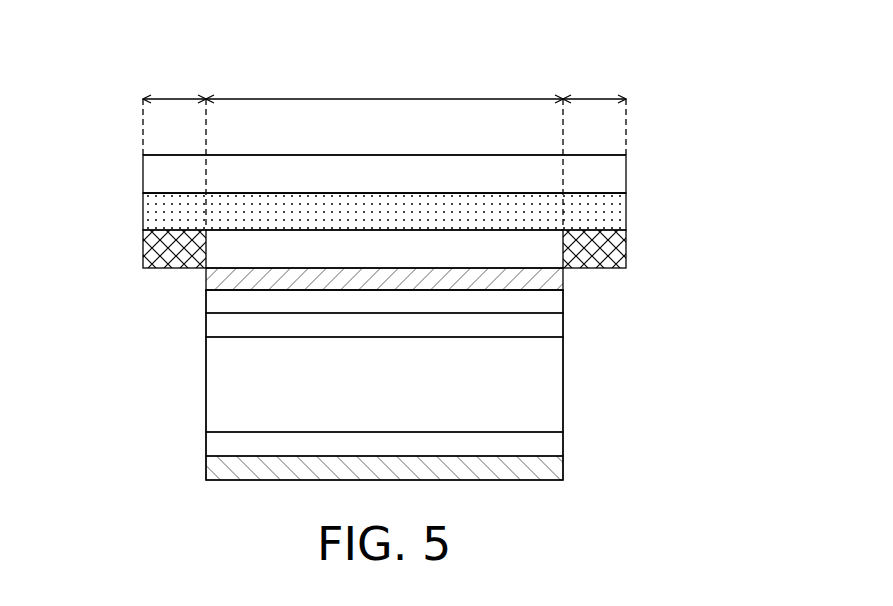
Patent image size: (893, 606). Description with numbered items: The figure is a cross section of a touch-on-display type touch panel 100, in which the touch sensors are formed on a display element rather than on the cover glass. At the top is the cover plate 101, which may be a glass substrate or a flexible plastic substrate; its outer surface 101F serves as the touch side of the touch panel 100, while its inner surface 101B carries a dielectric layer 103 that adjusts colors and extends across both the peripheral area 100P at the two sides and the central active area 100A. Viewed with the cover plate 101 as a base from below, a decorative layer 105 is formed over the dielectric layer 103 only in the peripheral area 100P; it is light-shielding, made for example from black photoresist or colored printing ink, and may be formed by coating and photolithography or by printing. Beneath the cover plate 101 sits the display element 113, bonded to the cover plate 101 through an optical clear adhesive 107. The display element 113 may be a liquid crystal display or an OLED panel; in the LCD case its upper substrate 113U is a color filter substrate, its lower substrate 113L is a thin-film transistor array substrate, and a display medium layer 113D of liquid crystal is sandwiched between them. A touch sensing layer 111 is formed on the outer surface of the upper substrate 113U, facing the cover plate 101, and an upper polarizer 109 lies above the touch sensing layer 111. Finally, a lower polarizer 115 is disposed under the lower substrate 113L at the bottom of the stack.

The touch panel 100 is at (660, 78).
The peripheral area 100P is at (385, 109).
The active area 100A is at (384, 147).
The cover plate 101 is at (614, 176).
The outer surface of the cover plate 101F is at (178, 152).
The inner surface of the cover plate 101B is at (176, 198).
The dielectric layer 103 is at (614, 212).
The decorative layer 105 is at (142, 250).
The optical clear adhesive 107 is at (540, 248).
The upper polarizer 109 is at (210, 276).
The touch sensing layer 111 is at (215, 302).
The display element 113 is at (680, 305).
The upper substrate 113U is at (553, 324).
The display medium layer 113D is at (555, 385).
The lower substrate 113L is at (553, 445).
The lower polarizer 115 is at (206, 462).